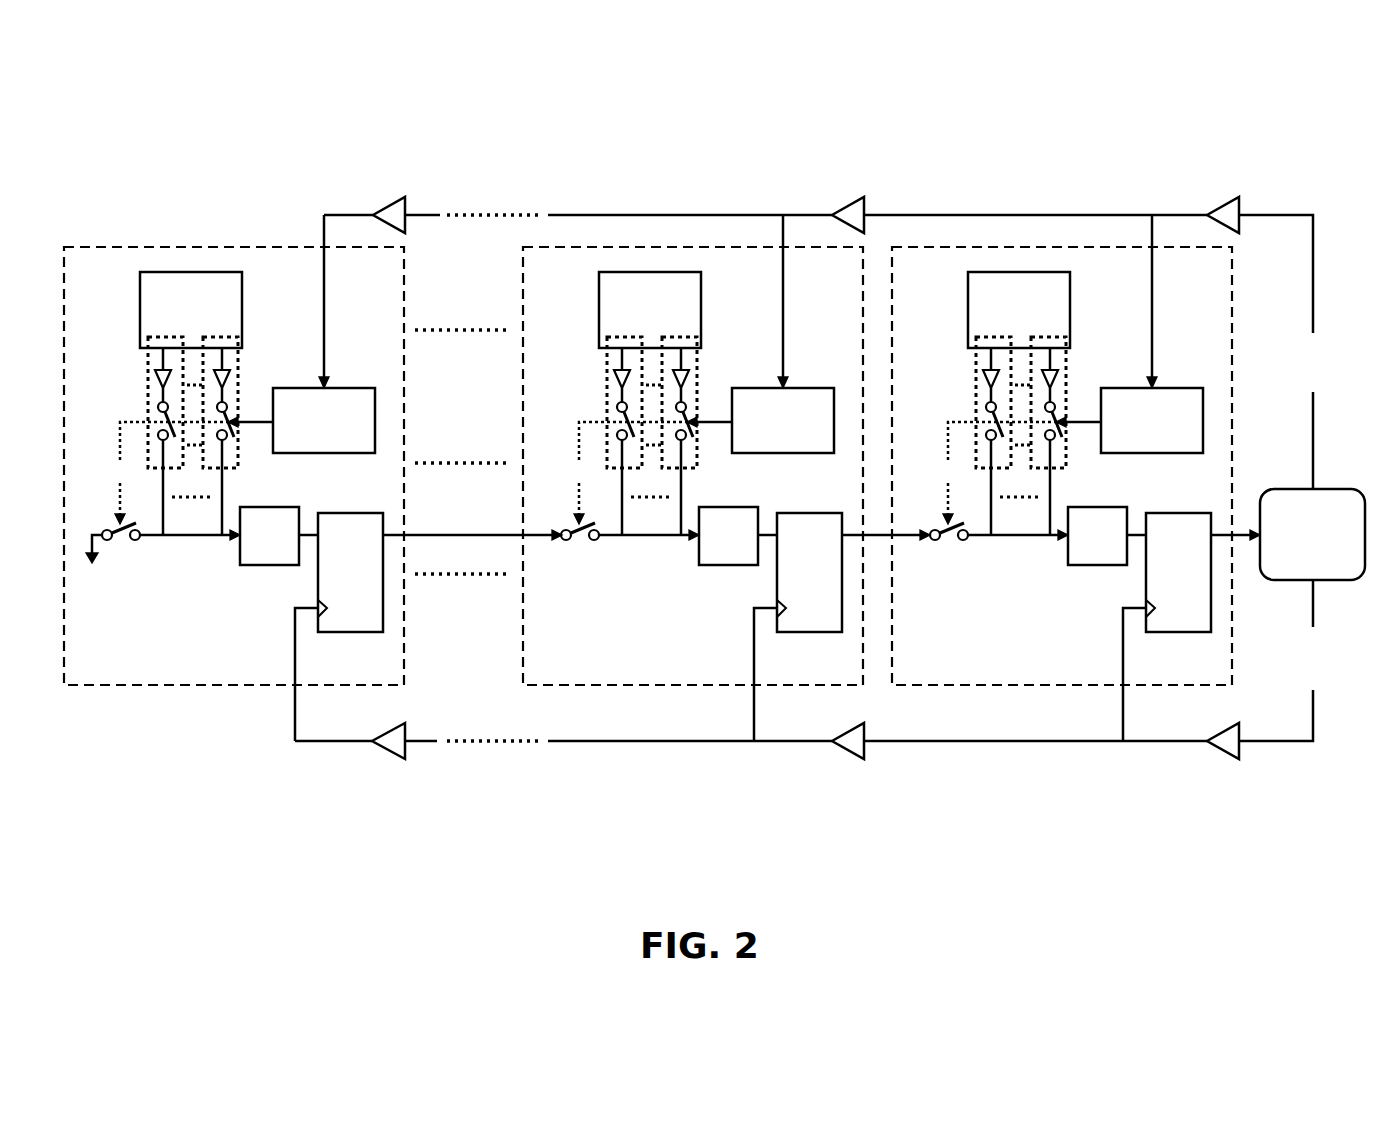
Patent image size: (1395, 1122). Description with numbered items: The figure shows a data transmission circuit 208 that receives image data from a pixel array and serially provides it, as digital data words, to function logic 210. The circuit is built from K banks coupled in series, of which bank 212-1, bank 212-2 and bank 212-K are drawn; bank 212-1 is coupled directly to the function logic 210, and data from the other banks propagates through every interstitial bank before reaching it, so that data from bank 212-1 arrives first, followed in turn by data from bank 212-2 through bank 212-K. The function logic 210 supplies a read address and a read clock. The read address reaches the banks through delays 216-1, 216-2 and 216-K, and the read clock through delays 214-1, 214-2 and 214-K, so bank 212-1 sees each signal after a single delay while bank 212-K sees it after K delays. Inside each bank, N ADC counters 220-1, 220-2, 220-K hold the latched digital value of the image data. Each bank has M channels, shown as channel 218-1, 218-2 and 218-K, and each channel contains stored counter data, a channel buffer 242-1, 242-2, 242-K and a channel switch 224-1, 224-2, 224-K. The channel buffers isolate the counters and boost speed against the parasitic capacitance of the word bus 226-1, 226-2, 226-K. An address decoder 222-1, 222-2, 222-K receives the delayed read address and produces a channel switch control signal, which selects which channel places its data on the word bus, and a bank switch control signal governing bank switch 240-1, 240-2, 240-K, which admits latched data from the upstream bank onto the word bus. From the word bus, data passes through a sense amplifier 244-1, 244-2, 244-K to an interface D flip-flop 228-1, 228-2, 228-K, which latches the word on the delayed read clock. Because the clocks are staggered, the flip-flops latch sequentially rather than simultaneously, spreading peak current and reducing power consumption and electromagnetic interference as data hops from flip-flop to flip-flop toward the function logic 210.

The data transmission circuit 208 is at (1274, 105).
The function logic 210 is at (1345, 488).
The bank K 212-K is at (137, 677).
The bank 2 212-2 is at (693, 478).
The bank 1 212-1 is at (1062, 478).
The read address delay 216-K is at (388, 205).
The read address delay 216-2 is at (847, 205).
The read address delay 216-1 is at (1222, 205).
The read clock delay 214-K is at (385, 753).
The read clock delay 214-2 is at (845, 753).
The read clock delay 214-1 is at (1220, 753).
The ADC counter 220-K is at (243, 307).
The ADC counter 220-2 is at (683, 309).
The ADC counter 220-1 is at (1052, 309).
The address decoder 222-K is at (353, 387).
The address decoder 222-2 is at (771, 334).
The address decoder 222-1 is at (1140, 334).
The channel switch 224-K is at (160, 413).
The channel switch 224-2 is at (617, 463).
The channel switch 224-1 is at (986, 463).
The channel buffer 242-K is at (156, 378).
The channel buffer 242-2 is at (612, 375).
The channel buffer 242-1 is at (981, 375).
The channel 218-K is at (146, 446).
The channel 218-2 is at (623, 473).
The channel 218-1 is at (992, 473).
The bank switch 240-K is at (124, 540).
The bank switch 240-2 is at (592, 555).
The bank switch 240-1 is at (961, 555).
The word bus 226-K is at (196, 540).
The word bus 226-2 is at (649, 559).
The word bus 226-1 is at (1018, 559).
The sense amplifier 244-K is at (273, 507).
The sense amplifier 244-2 is at (735, 513).
The sense amplifier 244-1 is at (1104, 513).
The interface D flip-flop 228-K is at (348, 513).
The interface D flip-flop 228-2 is at (801, 605).
The interface D flip-flop 228-1 is at (1170, 605).